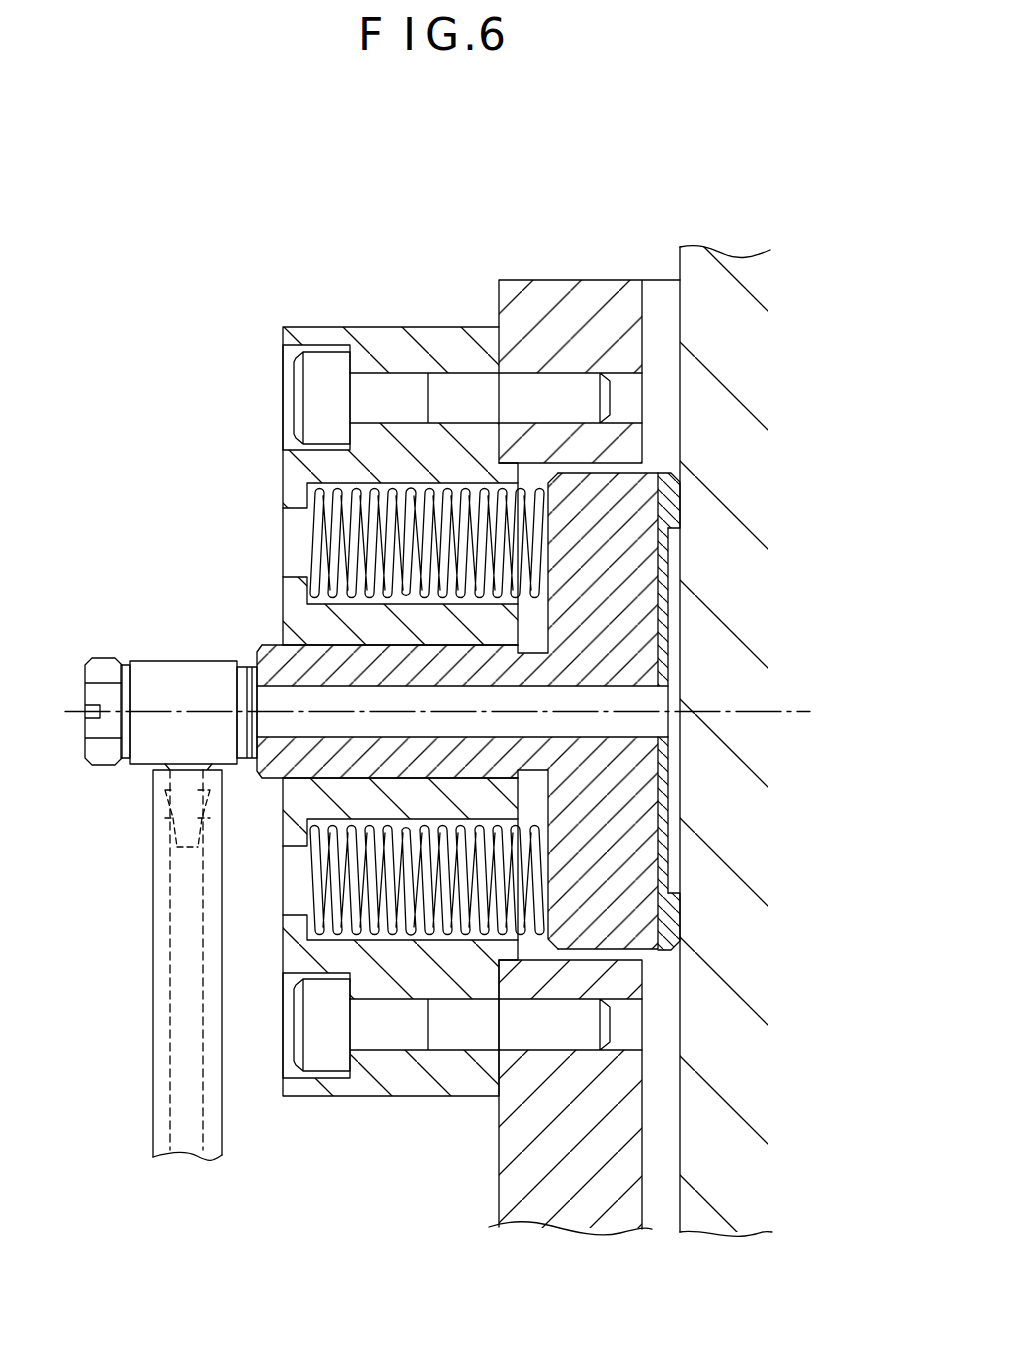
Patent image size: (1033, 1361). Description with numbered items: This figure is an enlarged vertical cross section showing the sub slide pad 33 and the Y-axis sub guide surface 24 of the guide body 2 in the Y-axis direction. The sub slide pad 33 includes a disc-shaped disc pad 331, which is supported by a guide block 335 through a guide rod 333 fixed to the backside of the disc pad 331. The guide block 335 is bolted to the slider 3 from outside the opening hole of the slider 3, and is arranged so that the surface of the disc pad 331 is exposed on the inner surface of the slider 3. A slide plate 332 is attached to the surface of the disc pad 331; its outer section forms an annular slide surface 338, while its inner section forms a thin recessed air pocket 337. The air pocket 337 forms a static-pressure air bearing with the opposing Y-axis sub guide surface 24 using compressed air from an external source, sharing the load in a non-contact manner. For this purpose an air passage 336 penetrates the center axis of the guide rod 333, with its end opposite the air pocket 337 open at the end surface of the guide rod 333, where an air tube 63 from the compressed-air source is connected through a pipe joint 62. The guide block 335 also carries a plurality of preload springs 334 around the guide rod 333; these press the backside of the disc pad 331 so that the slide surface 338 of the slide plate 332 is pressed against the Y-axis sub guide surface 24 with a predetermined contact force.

The guide body 2 is at (699, 228).
The slider 3 is at (519, 266).
The Y-axis sub guide surface 24 is at (680, 385).
The sub slide pad 33 is at (243, 290).
The disc pad 331 is at (622, 830).
The slide plate 332 is at (668, 912).
The guide rod 333 is at (277, 652).
The preload spring 334 is at (320, 530).
The guide block 335 is at (373, 327).
The air passage 336 is at (265, 700).
The air pocket 337 is at (672, 605).
The slide surface 338 is at (668, 515).
The pipe joint 62 is at (135, 766).
The air tube 63 is at (153, 980).